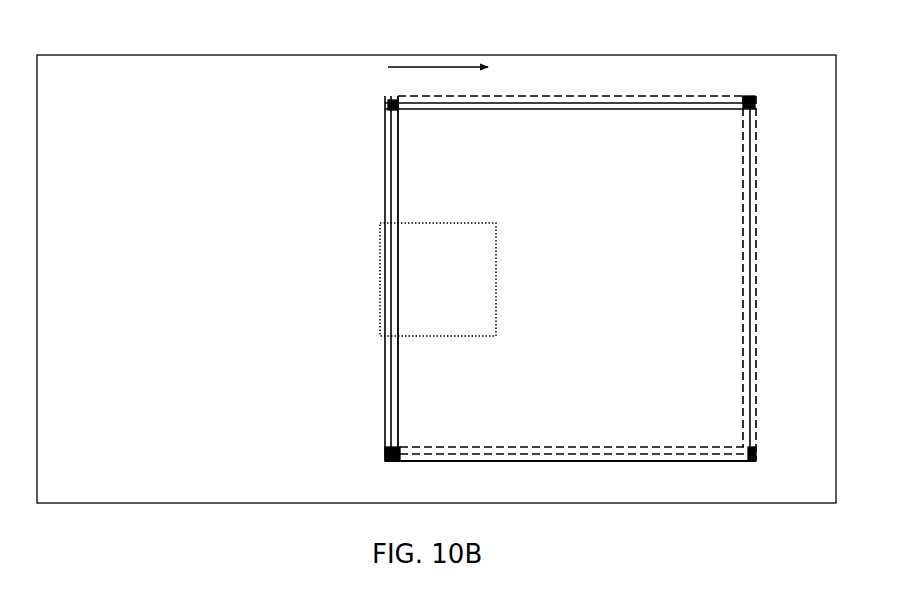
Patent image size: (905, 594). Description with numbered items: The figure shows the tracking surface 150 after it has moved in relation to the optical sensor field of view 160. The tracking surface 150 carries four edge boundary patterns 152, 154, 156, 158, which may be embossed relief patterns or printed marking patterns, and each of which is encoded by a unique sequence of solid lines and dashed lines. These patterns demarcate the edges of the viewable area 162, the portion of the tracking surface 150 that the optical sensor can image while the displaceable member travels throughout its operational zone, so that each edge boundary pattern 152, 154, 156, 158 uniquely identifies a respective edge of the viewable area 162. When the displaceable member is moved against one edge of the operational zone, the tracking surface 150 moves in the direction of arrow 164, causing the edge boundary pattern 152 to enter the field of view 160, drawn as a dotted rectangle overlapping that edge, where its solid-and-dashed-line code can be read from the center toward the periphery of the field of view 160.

The tracking surface 150 is at (157, 104).
The edge boundary pattern 152 is at (382, 190).
The edge boundary pattern 154 is at (628, 468).
The edge boundary pattern 156 is at (771, 208).
The edge boundary pattern 158 is at (641, 93).
The field of view 160 is at (496, 279).
The viewable area 162 is at (660, 173).
The arrow 164 is at (432, 60).